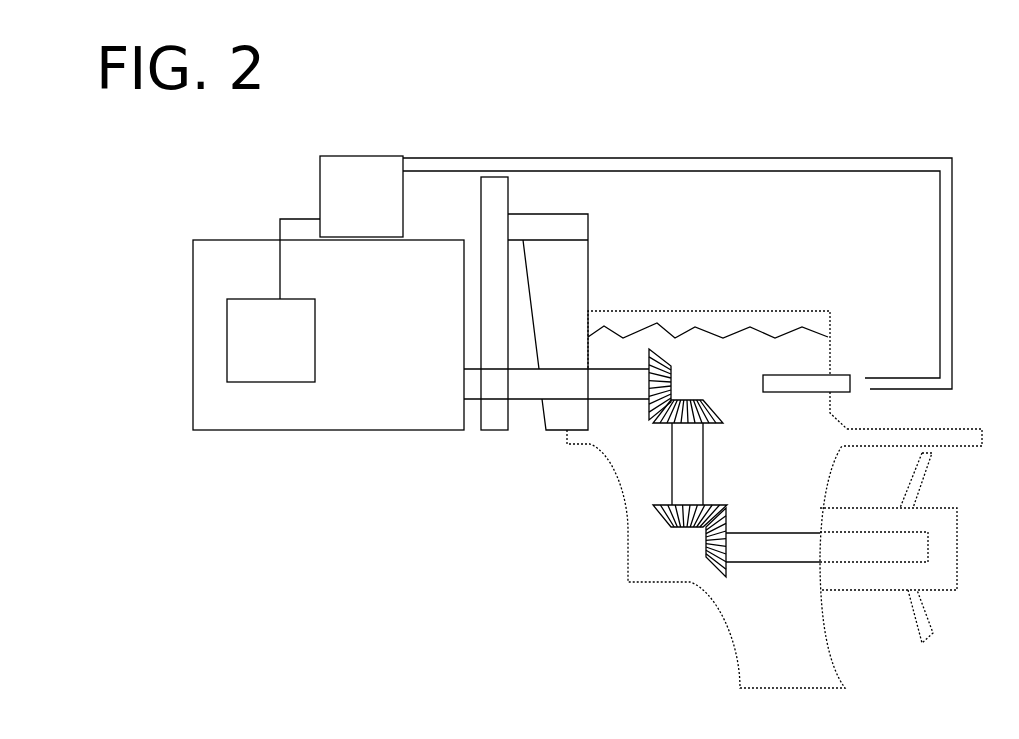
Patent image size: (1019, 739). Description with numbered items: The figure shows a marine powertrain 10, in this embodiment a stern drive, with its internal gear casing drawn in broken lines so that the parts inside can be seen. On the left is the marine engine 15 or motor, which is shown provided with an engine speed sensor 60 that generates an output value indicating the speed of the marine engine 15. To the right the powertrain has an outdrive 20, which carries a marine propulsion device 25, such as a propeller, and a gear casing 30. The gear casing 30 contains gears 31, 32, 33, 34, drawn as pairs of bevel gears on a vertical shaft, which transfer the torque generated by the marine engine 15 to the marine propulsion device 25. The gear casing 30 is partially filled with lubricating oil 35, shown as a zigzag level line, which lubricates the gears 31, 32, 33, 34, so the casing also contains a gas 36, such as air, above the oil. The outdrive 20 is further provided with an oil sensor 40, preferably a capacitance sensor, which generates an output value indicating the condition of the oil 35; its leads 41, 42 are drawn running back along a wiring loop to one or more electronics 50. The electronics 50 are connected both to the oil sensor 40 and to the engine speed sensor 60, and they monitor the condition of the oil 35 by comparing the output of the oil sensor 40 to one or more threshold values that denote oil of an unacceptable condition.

The marine powertrain 10 is at (399, 472).
The marine engine 15 is at (192, 362).
The outdrive 20 is at (602, 455).
The marine propulsion device 25 is at (940, 592).
The gear casing 30 is at (775, 464).
The gear 31 is at (661, 345).
The gear 32 is at (687, 397).
The gear 33 is at (672, 527).
The gear 34 is at (717, 560).
The lubricating oil 35 is at (828, 337).
The gas 36 is at (718, 327).
The oil sensor 40 is at (808, 383).
The first sensor lead 41 is at (855, 380).
The second sensor lead 42 is at (855, 390).
The electronics 50 is at (365, 180).
The engine speed sensor 60 is at (247, 375).